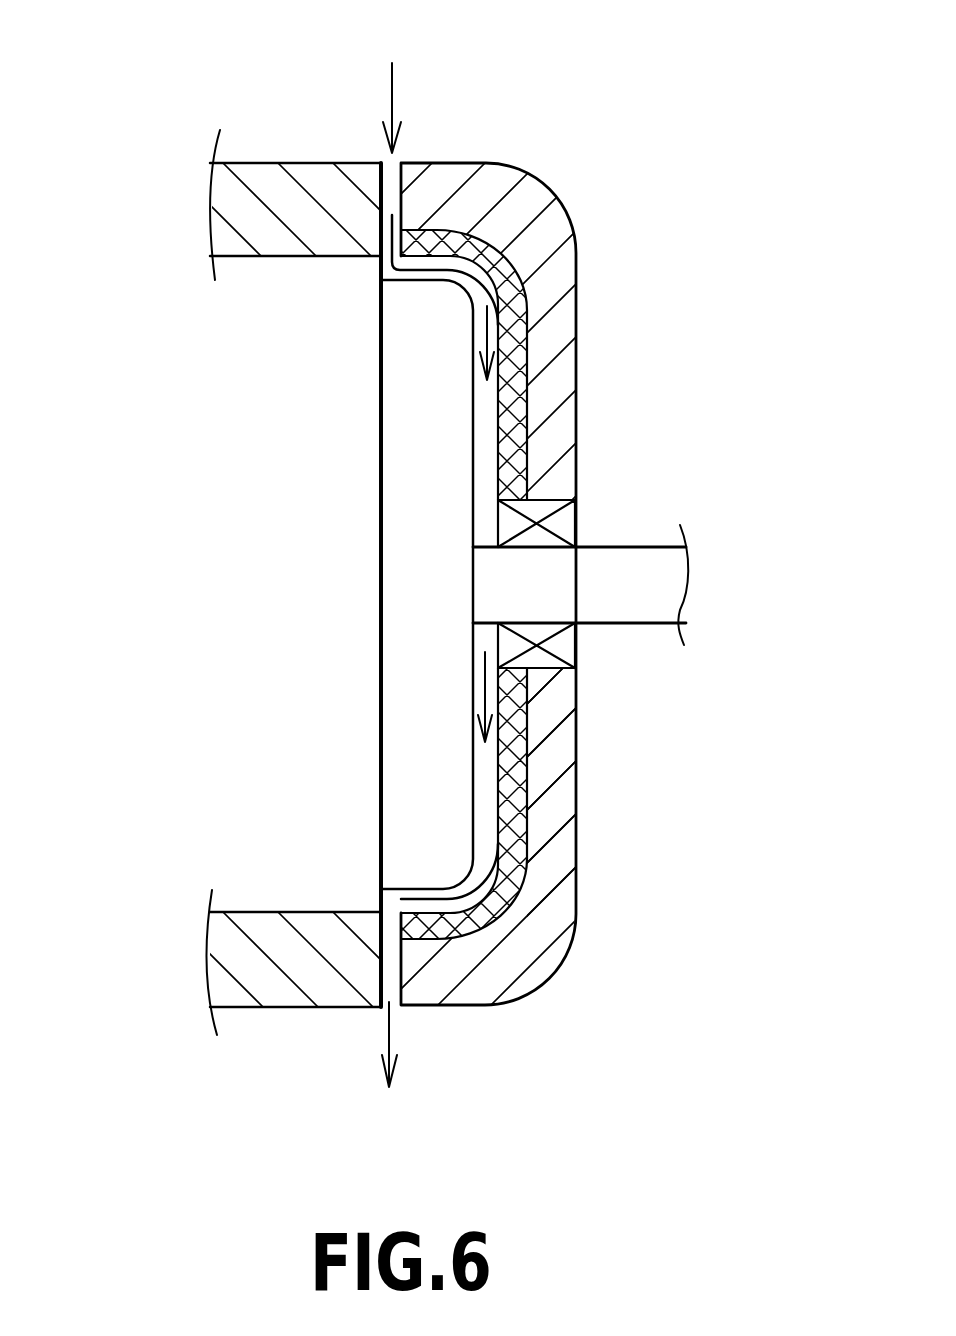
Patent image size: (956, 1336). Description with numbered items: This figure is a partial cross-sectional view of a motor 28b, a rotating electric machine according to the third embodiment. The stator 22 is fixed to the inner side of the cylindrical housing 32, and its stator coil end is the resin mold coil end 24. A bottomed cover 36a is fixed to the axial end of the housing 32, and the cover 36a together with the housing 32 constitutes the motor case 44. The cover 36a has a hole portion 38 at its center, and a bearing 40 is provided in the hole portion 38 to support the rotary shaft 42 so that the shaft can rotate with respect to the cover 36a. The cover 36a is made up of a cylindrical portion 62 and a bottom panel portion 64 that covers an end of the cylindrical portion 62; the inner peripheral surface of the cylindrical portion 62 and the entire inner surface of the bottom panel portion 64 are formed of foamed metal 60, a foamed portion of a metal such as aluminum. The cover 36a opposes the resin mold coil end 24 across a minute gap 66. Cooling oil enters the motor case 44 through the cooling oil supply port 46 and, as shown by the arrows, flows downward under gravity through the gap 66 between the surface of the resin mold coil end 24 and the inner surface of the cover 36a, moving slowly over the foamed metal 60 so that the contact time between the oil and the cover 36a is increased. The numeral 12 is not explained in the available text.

The engine 12 is at (302, 742).
The stator 22 is at (292, 405).
The resin mold coil end 24 is at (443, 805).
The motor 28b is at (623, 165).
The housing 32 is at (262, 162).
The cover 36a is at (578, 307).
The hole portion 38 is at (558, 517).
The bearing 40 is at (557, 643).
The rotary shaft 42 is at (640, 590).
The motor case 44 is at (293, 1008).
The cooling oil supply port 46 is at (397, 202).
The foamed metal 60 is at (498, 890).
The cylindrical portion 62 is at (453, 970).
The bottom panel portion 64 is at (550, 710).
The gap 66 is at (480, 430).